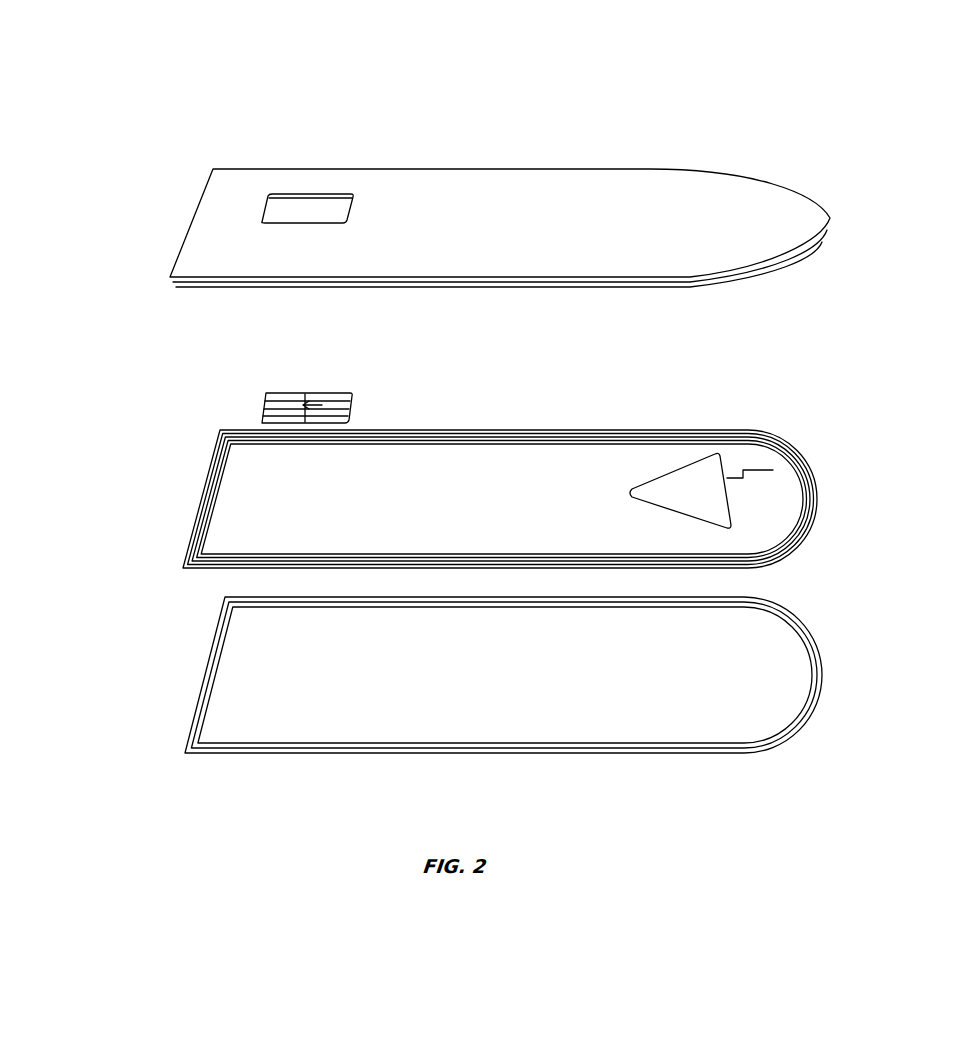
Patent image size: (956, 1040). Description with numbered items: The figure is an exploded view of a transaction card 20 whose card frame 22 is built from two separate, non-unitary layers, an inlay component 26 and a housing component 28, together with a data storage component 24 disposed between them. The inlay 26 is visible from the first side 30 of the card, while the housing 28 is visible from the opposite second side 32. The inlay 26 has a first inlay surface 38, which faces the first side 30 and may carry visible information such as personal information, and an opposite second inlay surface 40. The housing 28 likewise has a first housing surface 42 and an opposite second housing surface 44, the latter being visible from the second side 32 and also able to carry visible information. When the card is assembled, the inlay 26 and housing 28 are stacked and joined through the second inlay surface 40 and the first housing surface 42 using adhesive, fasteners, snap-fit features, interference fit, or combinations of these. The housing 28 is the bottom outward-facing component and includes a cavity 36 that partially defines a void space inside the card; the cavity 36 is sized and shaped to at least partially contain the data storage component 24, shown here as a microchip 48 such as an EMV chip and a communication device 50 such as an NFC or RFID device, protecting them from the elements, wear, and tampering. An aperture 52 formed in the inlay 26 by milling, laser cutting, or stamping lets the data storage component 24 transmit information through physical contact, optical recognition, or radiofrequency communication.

The transaction card 20 is at (439, 23).
The card frame 22 is at (71, 183).
The data storage component 24 is at (527, 352).
The inlay component 26 is at (190, 225).
The housing component 28 is at (213, 652).
The first side 30 is at (577, 127).
The second side 32 is at (622, 785).
The cavity 36 is at (716, 642).
The first inlay surface 38 is at (475, 193).
The second inlay surface 40 is at (572, 285).
The first housing surface 42 is at (233, 728).
The second housing surface 44 is at (280, 755).
The microchip 48 is at (352, 405).
The communication device 50 is at (517, 430).
The aperture 52 is at (310, 212).